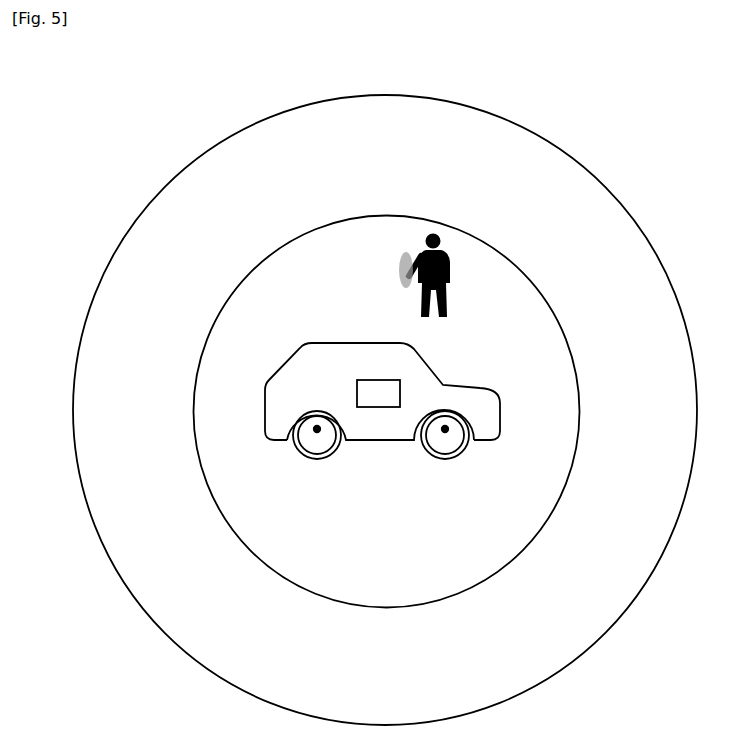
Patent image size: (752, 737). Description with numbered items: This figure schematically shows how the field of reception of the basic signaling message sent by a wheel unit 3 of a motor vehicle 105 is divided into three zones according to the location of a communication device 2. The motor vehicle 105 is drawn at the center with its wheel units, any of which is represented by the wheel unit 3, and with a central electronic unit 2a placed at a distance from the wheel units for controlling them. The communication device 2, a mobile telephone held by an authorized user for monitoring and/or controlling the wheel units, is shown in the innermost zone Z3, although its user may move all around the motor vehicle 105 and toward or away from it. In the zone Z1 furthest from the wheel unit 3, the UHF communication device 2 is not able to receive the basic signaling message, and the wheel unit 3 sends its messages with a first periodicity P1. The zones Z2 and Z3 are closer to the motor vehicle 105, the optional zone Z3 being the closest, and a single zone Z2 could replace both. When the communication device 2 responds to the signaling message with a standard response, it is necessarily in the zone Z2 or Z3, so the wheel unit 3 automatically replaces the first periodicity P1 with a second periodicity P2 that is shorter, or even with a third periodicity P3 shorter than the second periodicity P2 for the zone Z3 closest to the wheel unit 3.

The motor vehicle 105 is at (327, 341).
The communication device 2 is at (406, 274).
The central electronic unit 2a is at (383, 397).
The wheel unit 3 is at (317, 429).
The first zone Z1 is at (385, 410).
The second zone Z2 is at (197, 233).
The third zone Z3 is at (387, 412).
The first periodicity P1 is at (226, 93).
The second periodicity P2 is at (269, 176).
The third periodicity P3 is at (443, 548).